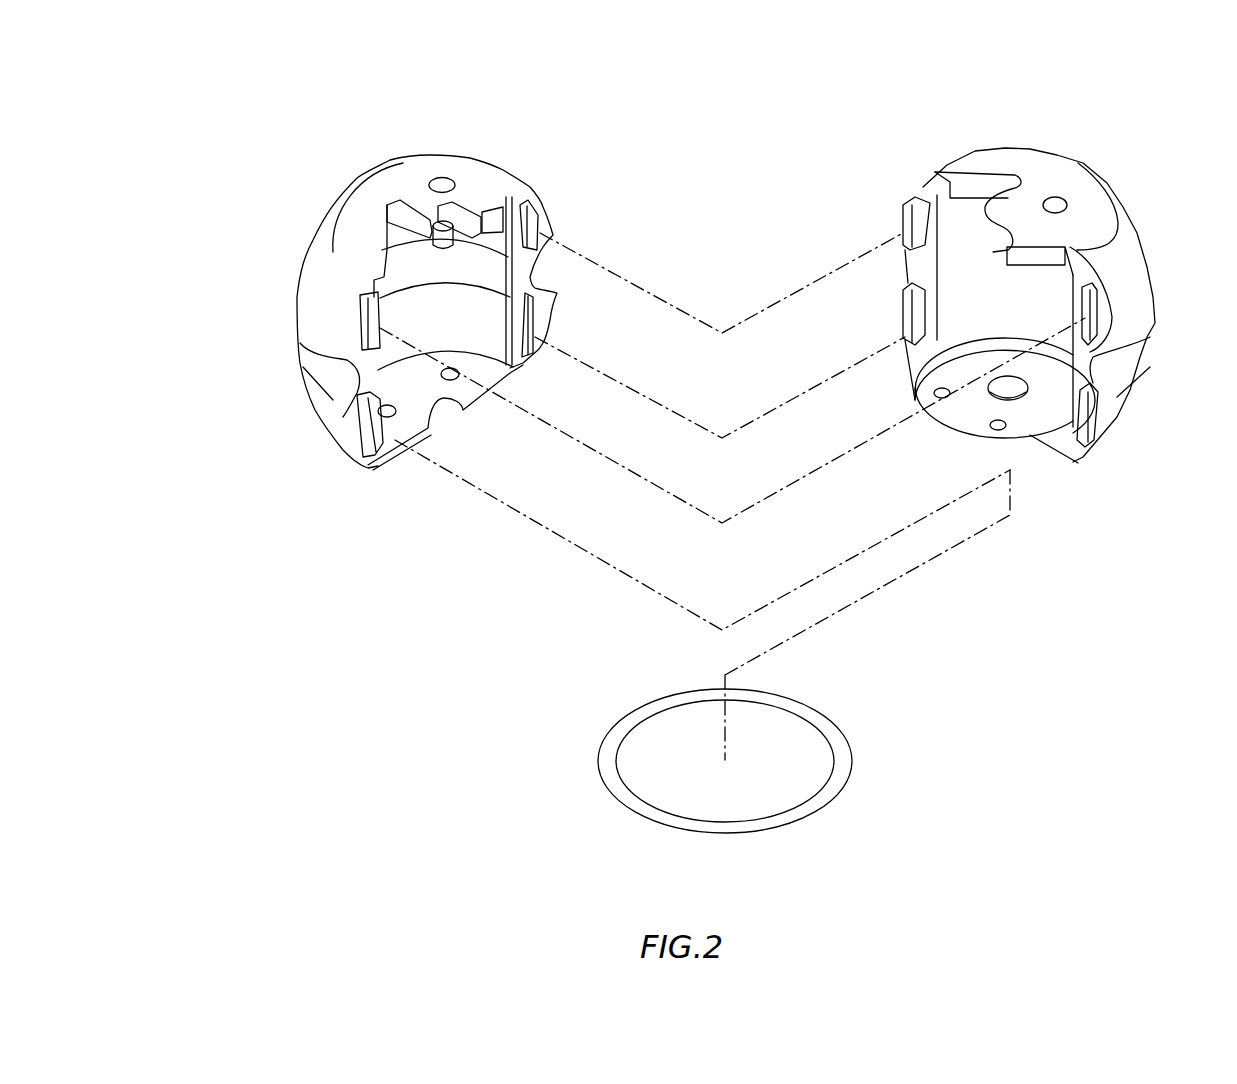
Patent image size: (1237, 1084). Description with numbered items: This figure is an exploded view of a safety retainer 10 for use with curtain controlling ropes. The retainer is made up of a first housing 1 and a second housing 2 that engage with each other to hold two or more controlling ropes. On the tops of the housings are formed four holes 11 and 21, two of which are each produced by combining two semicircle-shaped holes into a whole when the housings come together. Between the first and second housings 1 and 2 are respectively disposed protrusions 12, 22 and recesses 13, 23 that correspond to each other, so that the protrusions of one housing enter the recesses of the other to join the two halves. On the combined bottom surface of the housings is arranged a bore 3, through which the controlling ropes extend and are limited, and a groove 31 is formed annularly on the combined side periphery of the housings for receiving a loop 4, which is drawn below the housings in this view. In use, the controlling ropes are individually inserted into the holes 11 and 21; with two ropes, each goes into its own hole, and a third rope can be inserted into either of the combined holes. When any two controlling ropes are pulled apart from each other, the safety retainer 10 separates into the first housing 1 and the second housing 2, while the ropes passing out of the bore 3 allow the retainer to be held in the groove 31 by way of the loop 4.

The first housing 1 is at (323, 225).
The second housing 2 is at (1087, 168).
The bore 3 is at (1003, 390).
The loop 4 is at (732, 692).
The safety retainer 10 is at (231, 543).
The holes 11 is at (393, 203).
The protrusions 12 is at (352, 312).
The recesses 13 is at (528, 210).
The holes 21 is at (1012, 170).
The protrusions 22 is at (905, 207).
The recesses 23 is at (1090, 320).
The groove 31 is at (313, 345).